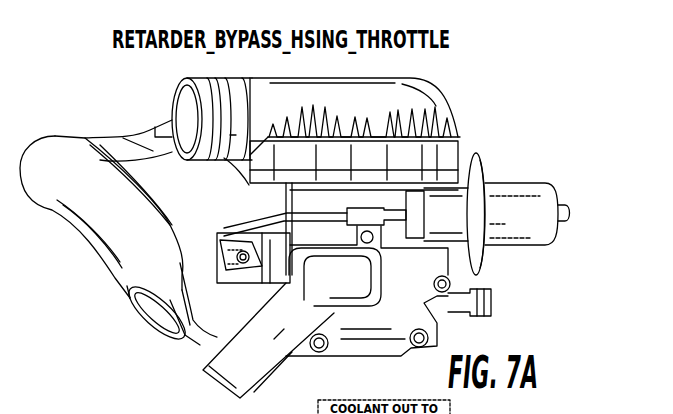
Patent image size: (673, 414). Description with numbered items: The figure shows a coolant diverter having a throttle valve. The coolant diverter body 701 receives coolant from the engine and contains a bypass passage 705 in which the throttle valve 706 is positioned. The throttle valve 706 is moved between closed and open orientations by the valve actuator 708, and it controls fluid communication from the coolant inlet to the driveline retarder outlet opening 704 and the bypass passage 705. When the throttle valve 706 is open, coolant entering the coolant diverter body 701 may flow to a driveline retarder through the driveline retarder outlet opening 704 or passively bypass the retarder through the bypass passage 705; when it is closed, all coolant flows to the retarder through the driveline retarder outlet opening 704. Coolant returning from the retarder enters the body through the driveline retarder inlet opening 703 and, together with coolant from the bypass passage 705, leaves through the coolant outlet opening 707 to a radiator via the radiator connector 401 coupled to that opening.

The coolant diverter body 701 is at (482, 104).
The radiator connector 401 is at (299, 107).
The driveline retarder inlet opening 703 is at (138, 135).
The driveline retarder outlet opening 704 is at (54, 136).
The bypass passage 705 is at (175, 286).
The throttle valve 706 is at (177, 339).
The coolant outlet opening 707 is at (335, 177).
The valve actuator 708 is at (530, 208).